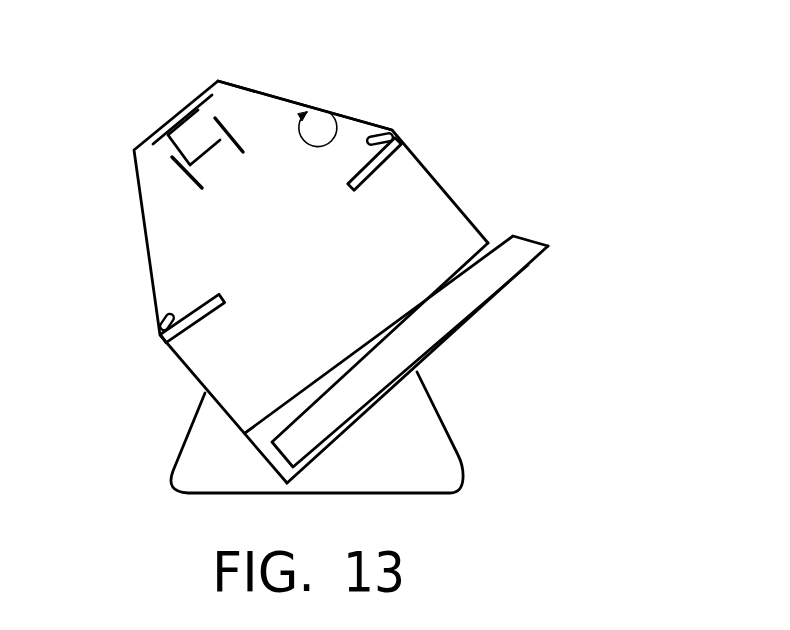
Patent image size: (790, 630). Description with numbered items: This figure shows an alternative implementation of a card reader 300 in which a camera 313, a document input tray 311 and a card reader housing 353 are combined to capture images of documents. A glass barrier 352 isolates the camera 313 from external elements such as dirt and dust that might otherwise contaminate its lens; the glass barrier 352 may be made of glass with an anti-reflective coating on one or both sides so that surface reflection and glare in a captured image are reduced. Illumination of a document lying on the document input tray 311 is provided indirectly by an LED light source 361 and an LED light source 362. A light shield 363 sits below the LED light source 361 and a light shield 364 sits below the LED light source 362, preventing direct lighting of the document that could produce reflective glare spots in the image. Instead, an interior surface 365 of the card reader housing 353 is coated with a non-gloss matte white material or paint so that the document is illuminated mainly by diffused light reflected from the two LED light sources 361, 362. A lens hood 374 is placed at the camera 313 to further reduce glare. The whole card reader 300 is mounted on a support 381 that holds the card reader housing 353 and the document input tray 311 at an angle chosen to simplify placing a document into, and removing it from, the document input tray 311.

The card reader 300 is at (586, 58).
The document input tray 311 is at (536, 238).
The camera 313 is at (185, 120).
The glass barrier 352 is at (452, 250).
The card reader housing 353 is at (212, 97).
The LED light source 361 is at (160, 321).
The LED light source 362 is at (379, 132).
The light shield 363 is at (192, 340).
The light shield 364 is at (398, 166).
The interior surface 365 is at (338, 115).
The lens hood 374 is at (243, 147).
The support 381 is at (463, 464).